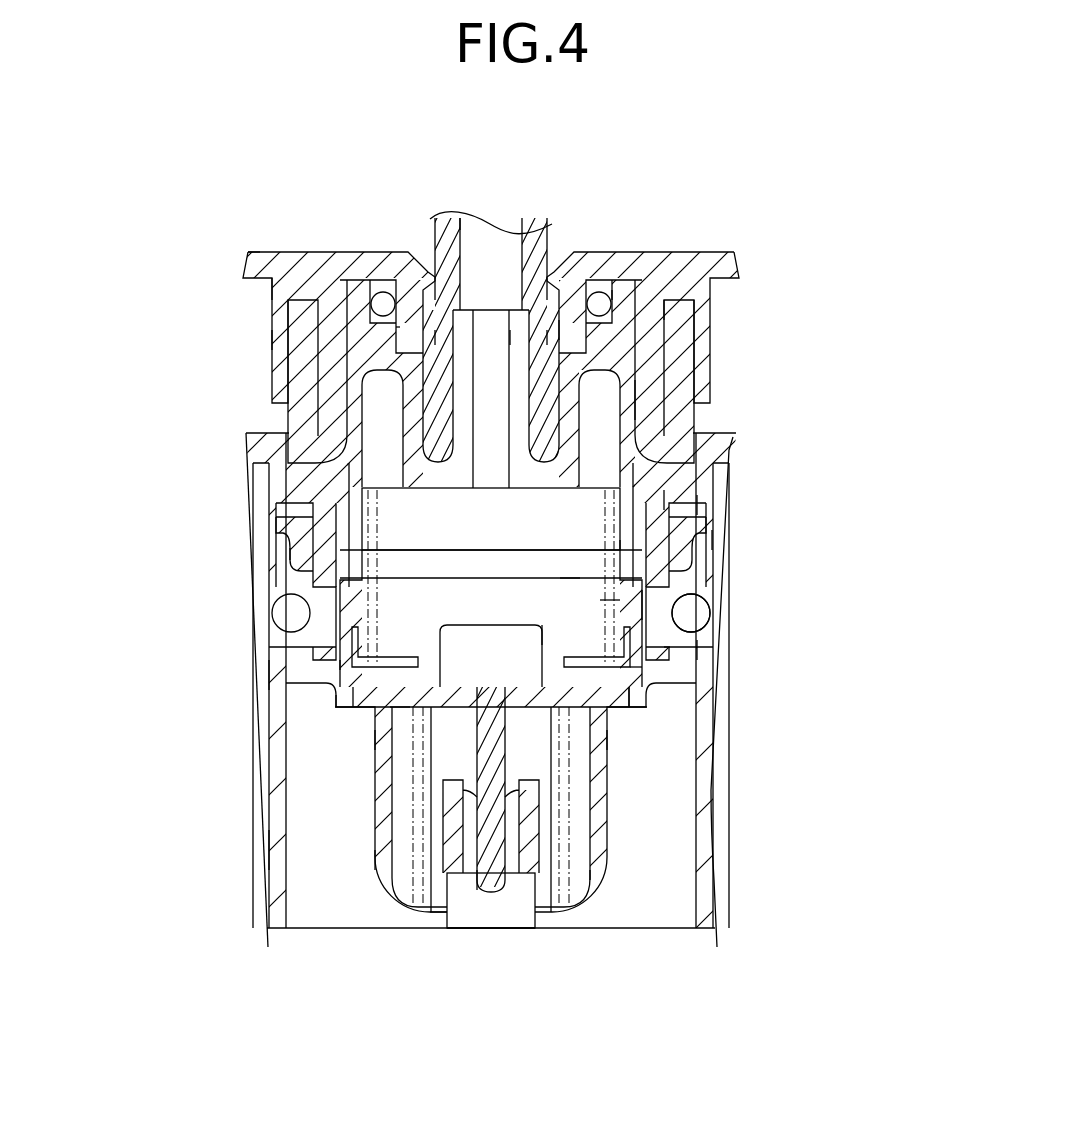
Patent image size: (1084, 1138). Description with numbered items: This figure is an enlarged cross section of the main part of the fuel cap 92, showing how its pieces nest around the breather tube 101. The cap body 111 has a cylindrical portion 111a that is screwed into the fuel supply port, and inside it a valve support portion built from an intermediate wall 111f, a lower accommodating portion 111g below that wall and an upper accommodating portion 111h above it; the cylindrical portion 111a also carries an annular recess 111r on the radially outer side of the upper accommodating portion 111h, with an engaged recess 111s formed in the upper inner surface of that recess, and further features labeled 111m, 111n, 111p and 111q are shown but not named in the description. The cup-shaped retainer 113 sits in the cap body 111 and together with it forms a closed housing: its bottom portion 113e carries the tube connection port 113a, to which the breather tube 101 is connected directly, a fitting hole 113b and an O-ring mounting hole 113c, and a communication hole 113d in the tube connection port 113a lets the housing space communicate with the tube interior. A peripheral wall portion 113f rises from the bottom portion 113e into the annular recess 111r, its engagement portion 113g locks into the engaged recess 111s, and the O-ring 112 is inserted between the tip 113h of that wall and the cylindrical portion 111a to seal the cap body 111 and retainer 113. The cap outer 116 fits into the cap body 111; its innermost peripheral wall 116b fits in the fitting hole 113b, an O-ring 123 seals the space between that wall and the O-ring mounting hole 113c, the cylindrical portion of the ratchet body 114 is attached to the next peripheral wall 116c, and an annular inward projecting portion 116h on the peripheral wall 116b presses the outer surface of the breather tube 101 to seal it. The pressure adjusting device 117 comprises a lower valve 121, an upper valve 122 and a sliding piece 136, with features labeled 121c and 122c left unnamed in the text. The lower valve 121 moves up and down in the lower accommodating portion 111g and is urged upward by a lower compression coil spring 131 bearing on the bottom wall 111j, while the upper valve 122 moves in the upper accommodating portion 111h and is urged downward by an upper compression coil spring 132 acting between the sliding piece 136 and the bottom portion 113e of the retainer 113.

The fuel cap 92 is at (185, 218).
The breather tube 101 is at (490, 226).
The cap body 111 is at (253, 672).
The cylindrical portion 111a is at (265, 850).
The intermediate wall 111f is at (335, 690).
The lower accommodating portion 111g is at (370, 880).
The upper accommodating portion 111h is at (700, 505).
The bottom wall 111j is at (430, 913).
The housing seat surface 111m is at (345, 664).
The housing boss 111n is at (377, 740).
The housing groove 111p is at (288, 535).
The housing recess 111q is at (700, 650).
The annular recess 111r is at (664, 655).
The engaged recess 111s is at (714, 540).
The O-ring 112 is at (562, 628).
The retainer 113 is at (640, 398).
The tube connection port 113a is at (506, 330).
The fitting hole 113b is at (572, 318).
The O-ring mounting hole 113c is at (604, 290).
The communication hole 113d is at (437, 333).
The bottom portion 113e is at (668, 497).
The peripheral wall portion 113f is at (572, 580).
The engagement portion 113g is at (645, 545).
The tip 113h is at (612, 608).
The ratchet body 114 is at (676, 318).
The cap outer 116 is at (283, 252).
The peripheral wall 116b is at (408, 330).
The peripheral wall 116c is at (282, 340).
The inward projecting portion 116h is at (556, 330).
The pressure adjusting device 117 is at (478, 930).
The lower valve 121 is at (490, 895).
The bolt flange 121c is at (632, 700).
The upper valve 122 is at (645, 603).
The bracket bottom 122c is at (398, 715).
The O-ring 123 is at (378, 293).
The lower compression coil spring 131 is at (585, 890).
The upper compression coil spring 132 is at (700, 613).
The sliding piece 136 is at (640, 672).